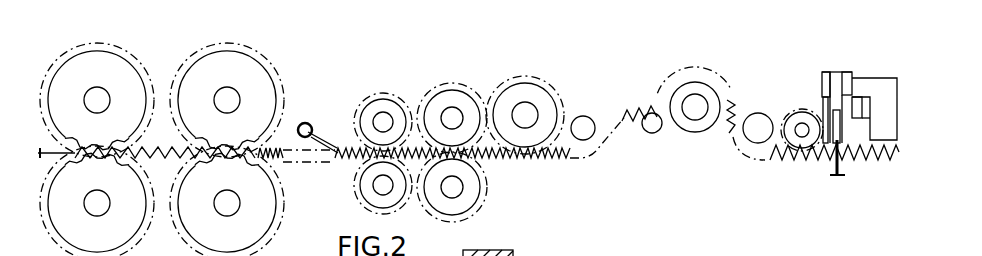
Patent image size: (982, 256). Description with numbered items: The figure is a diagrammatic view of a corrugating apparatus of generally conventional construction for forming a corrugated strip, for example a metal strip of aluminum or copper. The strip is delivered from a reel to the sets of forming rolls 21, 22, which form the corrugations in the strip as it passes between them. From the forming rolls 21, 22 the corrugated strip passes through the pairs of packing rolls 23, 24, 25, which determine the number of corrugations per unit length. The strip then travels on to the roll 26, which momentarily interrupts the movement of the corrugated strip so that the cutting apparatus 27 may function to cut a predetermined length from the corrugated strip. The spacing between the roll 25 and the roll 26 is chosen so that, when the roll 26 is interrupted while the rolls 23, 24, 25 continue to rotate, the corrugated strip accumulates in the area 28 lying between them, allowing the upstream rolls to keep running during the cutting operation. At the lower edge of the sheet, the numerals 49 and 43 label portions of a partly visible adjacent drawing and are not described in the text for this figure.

In FIG. 1, the forming roll 21 is at (95, 68).
In FIG. 1, the forming roll 22 is at (236, 66).
In FIG. 1, the packing roll 23 is at (382, 103).
In FIG. 1, the packing roll 24 is at (449, 99).
In FIG. 1, the packing roll 25 is at (530, 95).
In FIG. 1, the roll 26 is at (802, 112).
In FIG. 1, the cutting apparatus 27 is at (854, 62).
In FIG. 1, the accumulation area 28 is at (720, 68).
In FIG. 2, the support strip 49 is at (496, 252).
In FIG. 2, the web section 43 is at (520, 255).